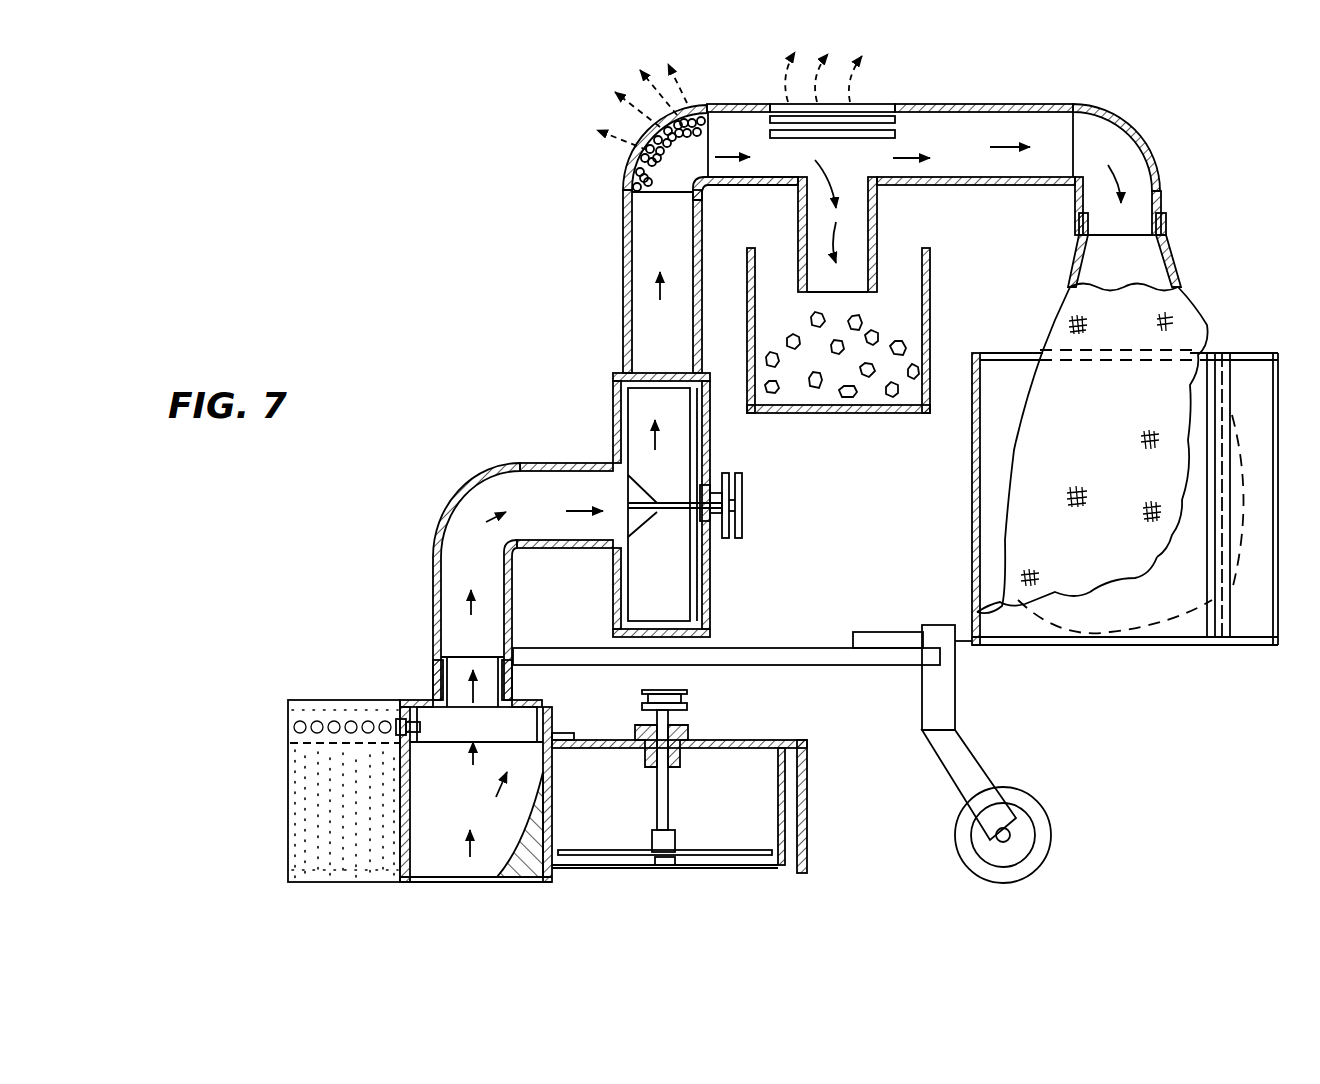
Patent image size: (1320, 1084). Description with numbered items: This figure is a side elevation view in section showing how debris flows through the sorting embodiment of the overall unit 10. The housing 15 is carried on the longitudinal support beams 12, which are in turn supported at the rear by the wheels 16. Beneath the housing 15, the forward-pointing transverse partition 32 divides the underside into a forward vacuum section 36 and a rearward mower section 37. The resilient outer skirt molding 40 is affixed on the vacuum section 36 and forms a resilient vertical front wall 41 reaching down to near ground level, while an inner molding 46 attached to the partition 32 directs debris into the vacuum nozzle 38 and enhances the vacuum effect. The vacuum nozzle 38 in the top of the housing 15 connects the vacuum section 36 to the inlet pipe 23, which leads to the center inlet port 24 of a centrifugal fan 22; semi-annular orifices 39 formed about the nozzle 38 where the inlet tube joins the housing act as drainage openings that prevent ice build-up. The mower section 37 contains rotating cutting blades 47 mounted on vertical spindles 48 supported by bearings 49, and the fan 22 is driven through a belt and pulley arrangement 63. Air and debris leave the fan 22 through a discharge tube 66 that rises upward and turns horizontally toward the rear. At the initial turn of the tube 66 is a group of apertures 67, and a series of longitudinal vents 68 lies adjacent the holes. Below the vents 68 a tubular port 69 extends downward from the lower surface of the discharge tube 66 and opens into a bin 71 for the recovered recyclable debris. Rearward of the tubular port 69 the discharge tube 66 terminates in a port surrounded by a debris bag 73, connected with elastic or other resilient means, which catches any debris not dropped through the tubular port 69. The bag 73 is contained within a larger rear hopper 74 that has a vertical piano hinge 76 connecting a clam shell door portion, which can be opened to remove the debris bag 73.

The overall unit 10 is at (498, 337).
The longitudinal support beams 12 is at (775, 648).
The housing 15 is at (820, 813).
The wheels 16 is at (1030, 800).
The centrifugal fans 22 is at (603, 397).
The inlet pipe 23 is at (433, 571).
The center inlet port 24 is at (597, 478).
The transverse partition 32 is at (551, 872).
The forward vacuum section 36 is at (430, 846).
The mower section 37 is at (627, 824).
The vacuum nozzle 38 is at (433, 692).
The semi-annular orifices 39 is at (510, 682).
The resilient outer skirt molding 40 is at (318, 797).
The resilient vertical front wall 41 is at (320, 870).
The inner molding 46 is at (523, 868).
The rotating cutting blades 47 is at (722, 853).
The vertical spindles 48 is at (668, 792).
The bearings 49 is at (688, 733).
The belt and pulley arrangement 63 is at (745, 513).
The discharge tube 66 is at (623, 230).
The apertures 67 is at (683, 110).
The longitudinal vents 68 is at (882, 135).
The tubular port 69 is at (877, 226).
The bin 71 is at (865, 414).
The debris bag 73 is at (1072, 303).
The rear hopper 74 is at (972, 503).
The vertical piano hinge 76 is at (1218, 408).